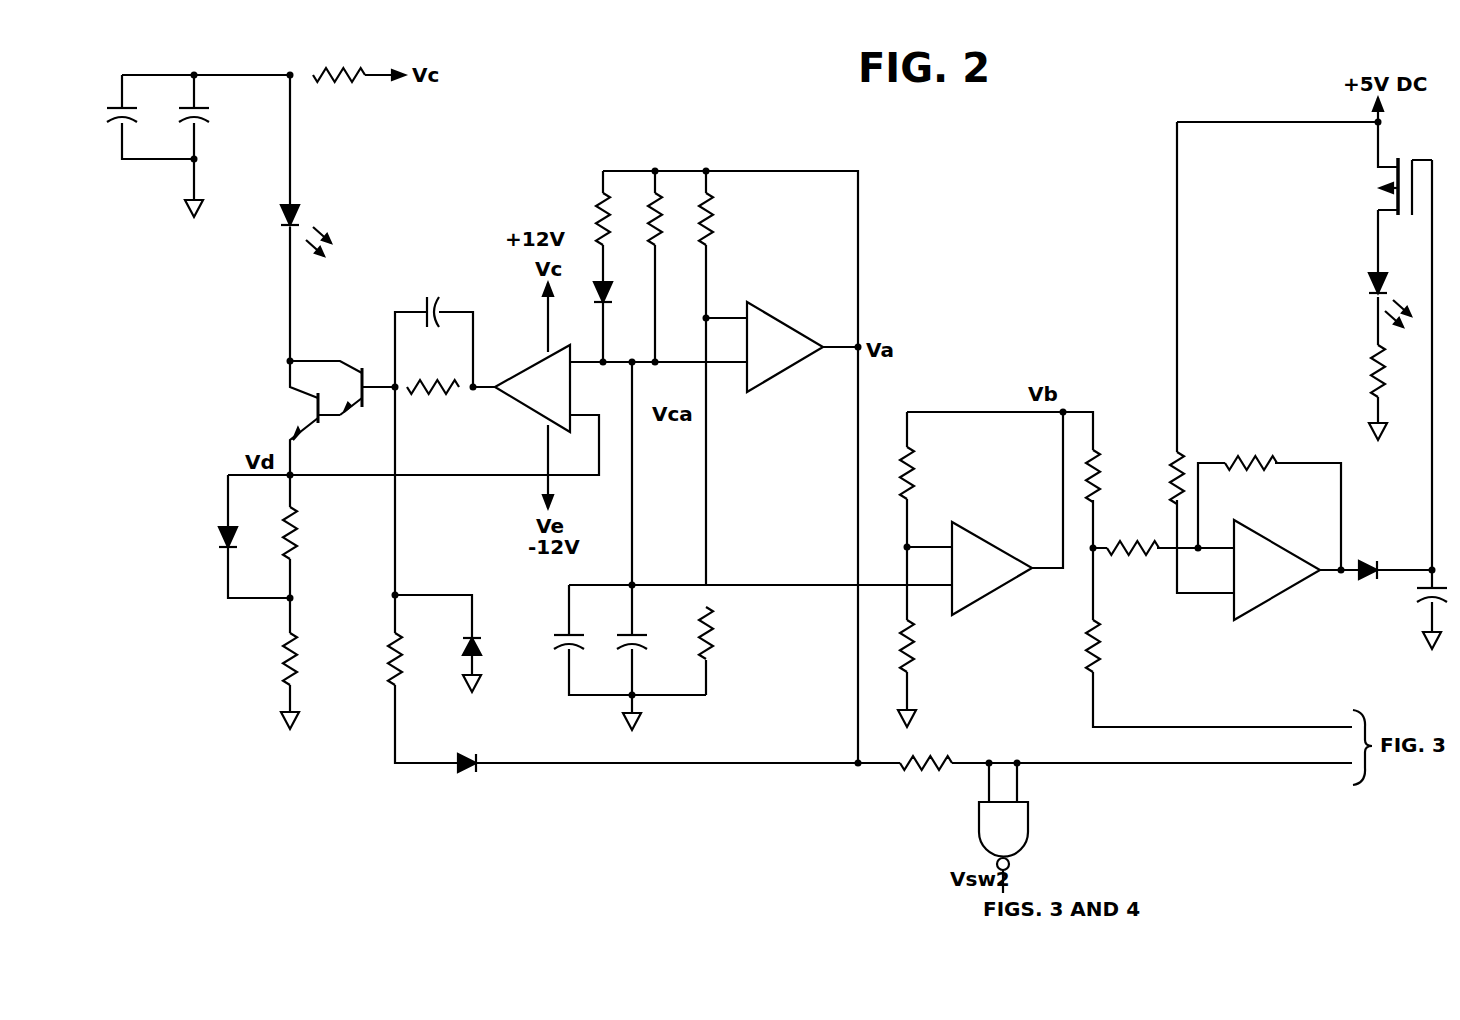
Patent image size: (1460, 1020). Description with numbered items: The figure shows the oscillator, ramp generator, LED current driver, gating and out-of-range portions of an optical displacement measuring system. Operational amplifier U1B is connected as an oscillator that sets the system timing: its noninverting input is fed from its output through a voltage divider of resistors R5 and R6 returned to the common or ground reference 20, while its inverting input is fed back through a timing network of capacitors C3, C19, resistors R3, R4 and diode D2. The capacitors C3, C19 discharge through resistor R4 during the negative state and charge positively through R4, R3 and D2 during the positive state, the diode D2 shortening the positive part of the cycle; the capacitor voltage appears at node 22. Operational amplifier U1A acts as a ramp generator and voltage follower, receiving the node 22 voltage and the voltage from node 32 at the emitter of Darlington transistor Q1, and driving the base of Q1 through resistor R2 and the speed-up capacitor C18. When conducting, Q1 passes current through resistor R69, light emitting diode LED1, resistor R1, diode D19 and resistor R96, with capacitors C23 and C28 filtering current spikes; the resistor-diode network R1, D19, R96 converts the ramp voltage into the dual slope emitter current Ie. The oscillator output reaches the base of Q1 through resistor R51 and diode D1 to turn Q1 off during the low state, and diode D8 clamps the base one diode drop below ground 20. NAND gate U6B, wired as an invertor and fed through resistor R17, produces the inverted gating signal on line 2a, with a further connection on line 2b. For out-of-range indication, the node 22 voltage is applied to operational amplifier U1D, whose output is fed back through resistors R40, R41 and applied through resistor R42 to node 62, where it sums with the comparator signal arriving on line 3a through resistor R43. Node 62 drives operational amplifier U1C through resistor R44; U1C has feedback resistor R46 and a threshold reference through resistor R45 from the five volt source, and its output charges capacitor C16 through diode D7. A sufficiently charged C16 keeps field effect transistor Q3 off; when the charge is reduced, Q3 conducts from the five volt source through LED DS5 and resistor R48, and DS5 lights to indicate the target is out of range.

The capacitor C28 is at (110, 107).
The capacitor C23 is at (203, 106).
The resistor R69 is at (339, 60).
The light emitting diode LED1 is at (326, 224).
The Darlington transistor Q1 is at (327, 388).
The emitter current Ie is at (294, 473).
The node 32 is at (294, 478).
The diode D19 is at (206, 539).
The resistor R1 is at (307, 533).
The resistor R96 is at (314, 681).
The capacitor C18 is at (438, 297).
The resistor R2 is at (433, 400).
The operational amplifier U1A is at (532, 394).
The resistor R3 is at (583, 218).
The diode D2 is at (618, 291).
The resistor R4 is at (657, 228).
The resistor R5 is at (724, 219).
The node 22 is at (632, 365).
The operational amplifier U1B is at (787, 339).
The resistor R51 is at (397, 655).
The diode D8 is at (492, 665).
The common or ground reference 20 is at (628, 725).
The capacitor C19 is at (585, 630).
The capacitor C3 is at (642, 655).
The resistor R6 is at (723, 633).
The diode D1 is at (477, 778).
The resistor R17 is at (926, 779).
The NAND gate U6B is at (1031, 836).
The line 2a is at (1025, 879).
The resistor R40 is at (932, 473).
The resistor R41 is at (931, 673).
The operational amplifier U1D is at (990, 564).
The resistor R42 is at (1098, 456).
The resistor R43 is at (1118, 646).
The resistor R44 is at (1133, 536).
The node 62 is at (1091, 550).
The resistor R45 is at (1173, 466).
The resistor R46 is at (1251, 449).
The operational amplifier U1C is at (1271, 568).
The diode D7 is at (1375, 552).
The capacitor C16 is at (1418, 618).
The transistor Q3 is at (1377, 186).
The LED DS5 is at (1361, 299).
The resistor R48 is at (1352, 392).
The line 3a is at (1333, 714).
The line 2b is at (1332, 754).